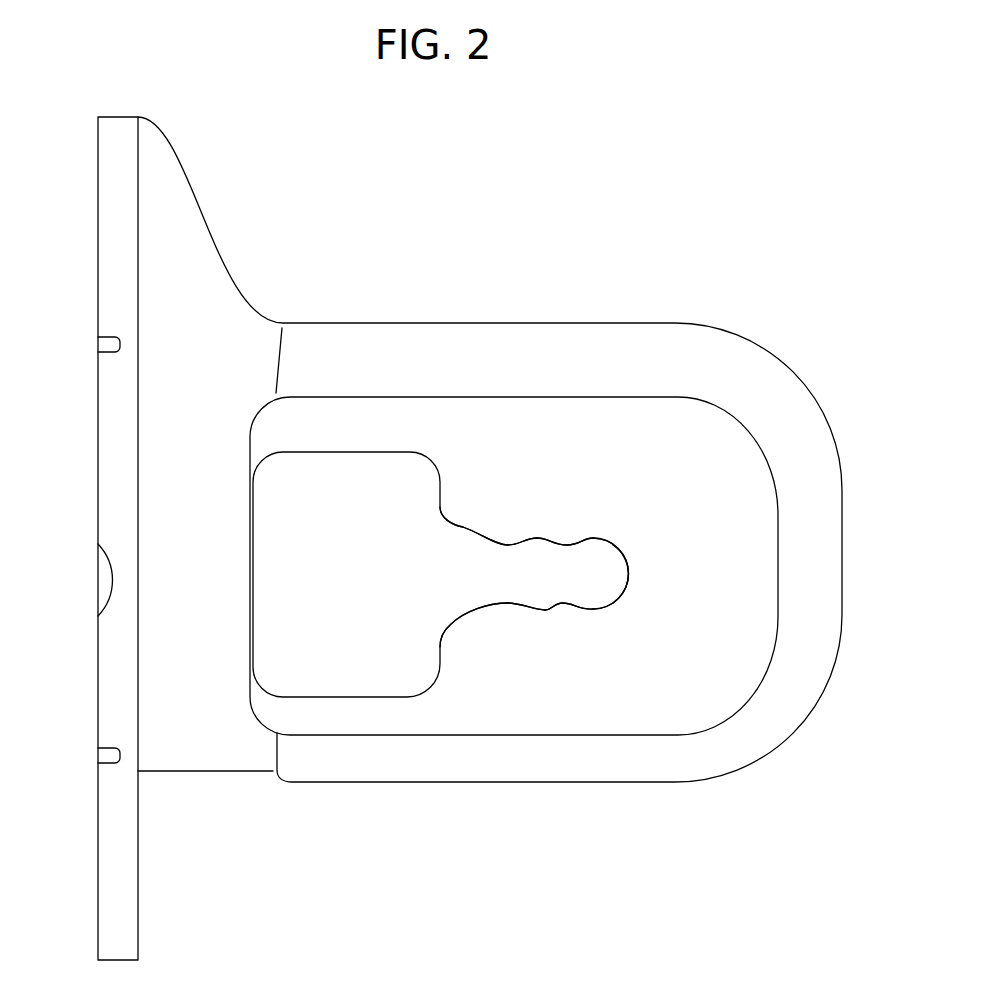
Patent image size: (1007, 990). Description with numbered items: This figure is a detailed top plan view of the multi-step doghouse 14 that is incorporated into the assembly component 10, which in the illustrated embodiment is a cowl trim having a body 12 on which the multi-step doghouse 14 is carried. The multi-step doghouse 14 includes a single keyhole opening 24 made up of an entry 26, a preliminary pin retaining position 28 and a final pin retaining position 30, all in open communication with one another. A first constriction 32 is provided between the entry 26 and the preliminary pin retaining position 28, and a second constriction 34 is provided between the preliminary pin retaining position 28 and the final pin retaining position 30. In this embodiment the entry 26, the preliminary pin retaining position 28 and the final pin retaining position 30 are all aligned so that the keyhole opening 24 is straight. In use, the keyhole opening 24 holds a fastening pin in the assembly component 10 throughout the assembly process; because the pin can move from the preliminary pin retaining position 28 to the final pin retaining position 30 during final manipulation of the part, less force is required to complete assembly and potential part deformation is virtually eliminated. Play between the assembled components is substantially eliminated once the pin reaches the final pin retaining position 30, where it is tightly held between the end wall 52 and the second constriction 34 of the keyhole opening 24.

The assembly component 10 is at (215, 113).
The body 12 is at (98, 253).
The multi-step doghouse 14 is at (674, 290).
The keyhole opening 24 is at (417, 633).
The entry 26 is at (463, 527).
The preliminary pin retaining position 28 is at (538, 595).
The final pin retaining position 30 is at (597, 575).
The first constriction 32 is at (508, 545).
The second constriction 34 is at (567, 545).
The end wall 52 is at (630, 573).